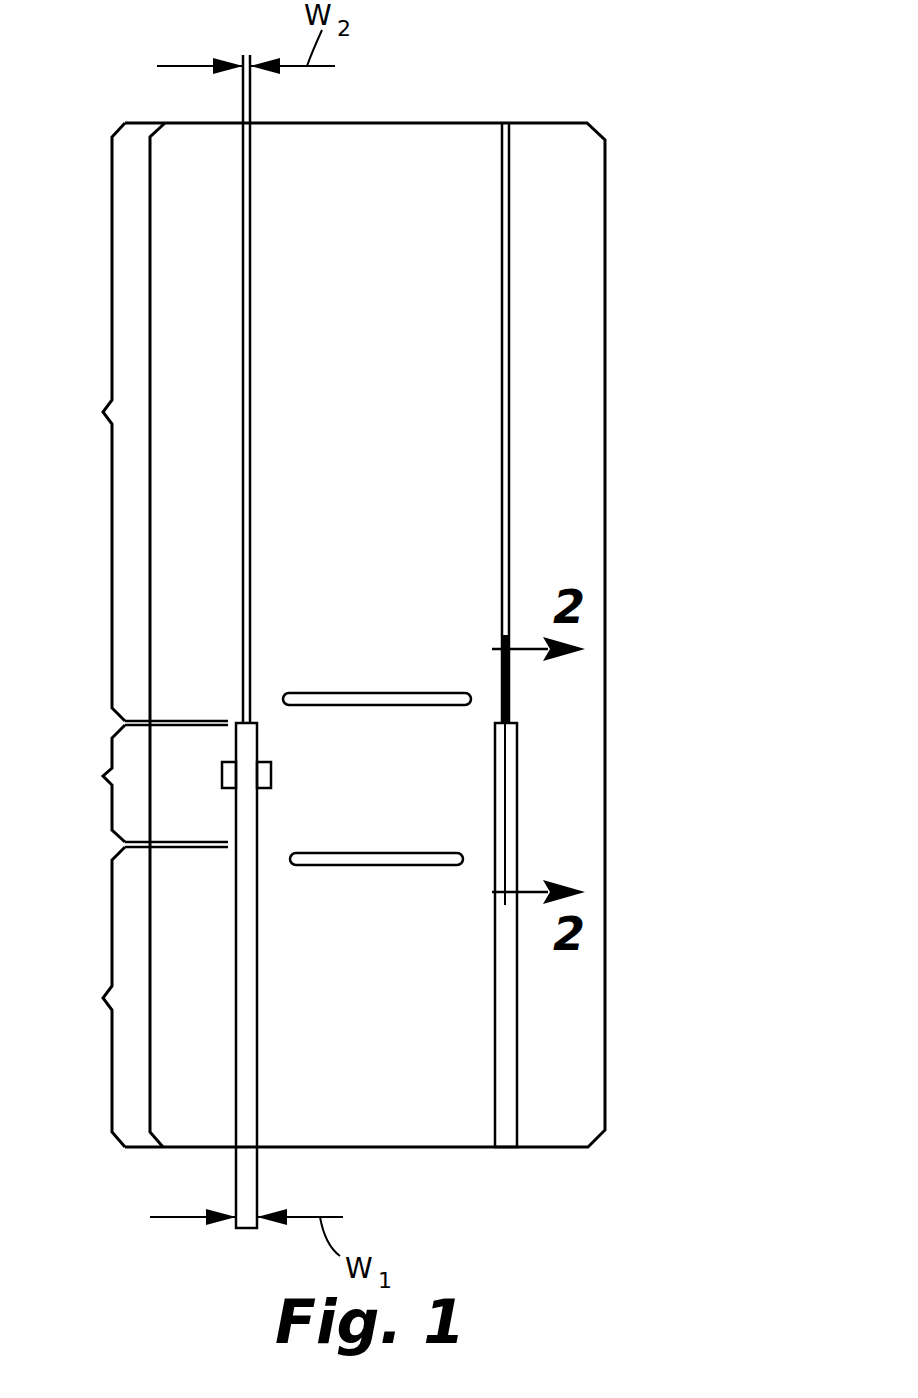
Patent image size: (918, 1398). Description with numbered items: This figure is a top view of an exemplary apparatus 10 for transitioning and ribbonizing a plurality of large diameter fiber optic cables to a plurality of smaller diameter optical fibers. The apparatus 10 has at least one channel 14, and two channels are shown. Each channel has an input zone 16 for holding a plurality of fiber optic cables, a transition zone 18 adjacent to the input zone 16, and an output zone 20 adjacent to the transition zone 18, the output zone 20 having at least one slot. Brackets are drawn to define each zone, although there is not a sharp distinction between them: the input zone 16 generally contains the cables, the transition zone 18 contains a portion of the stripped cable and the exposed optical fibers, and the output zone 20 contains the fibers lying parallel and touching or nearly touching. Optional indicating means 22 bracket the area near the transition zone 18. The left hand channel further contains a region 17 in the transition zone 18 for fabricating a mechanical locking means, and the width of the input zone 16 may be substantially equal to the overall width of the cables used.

The apparatus 10 is at (655, 145).
The channel 14 is at (520, 480).
The input zone 16 is at (92, 997).
The region 17 is at (271, 776).
The transition zone 18 is at (143, 784).
The output zone 20 is at (91, 422).
The indicating means 22 is at (450, 853).